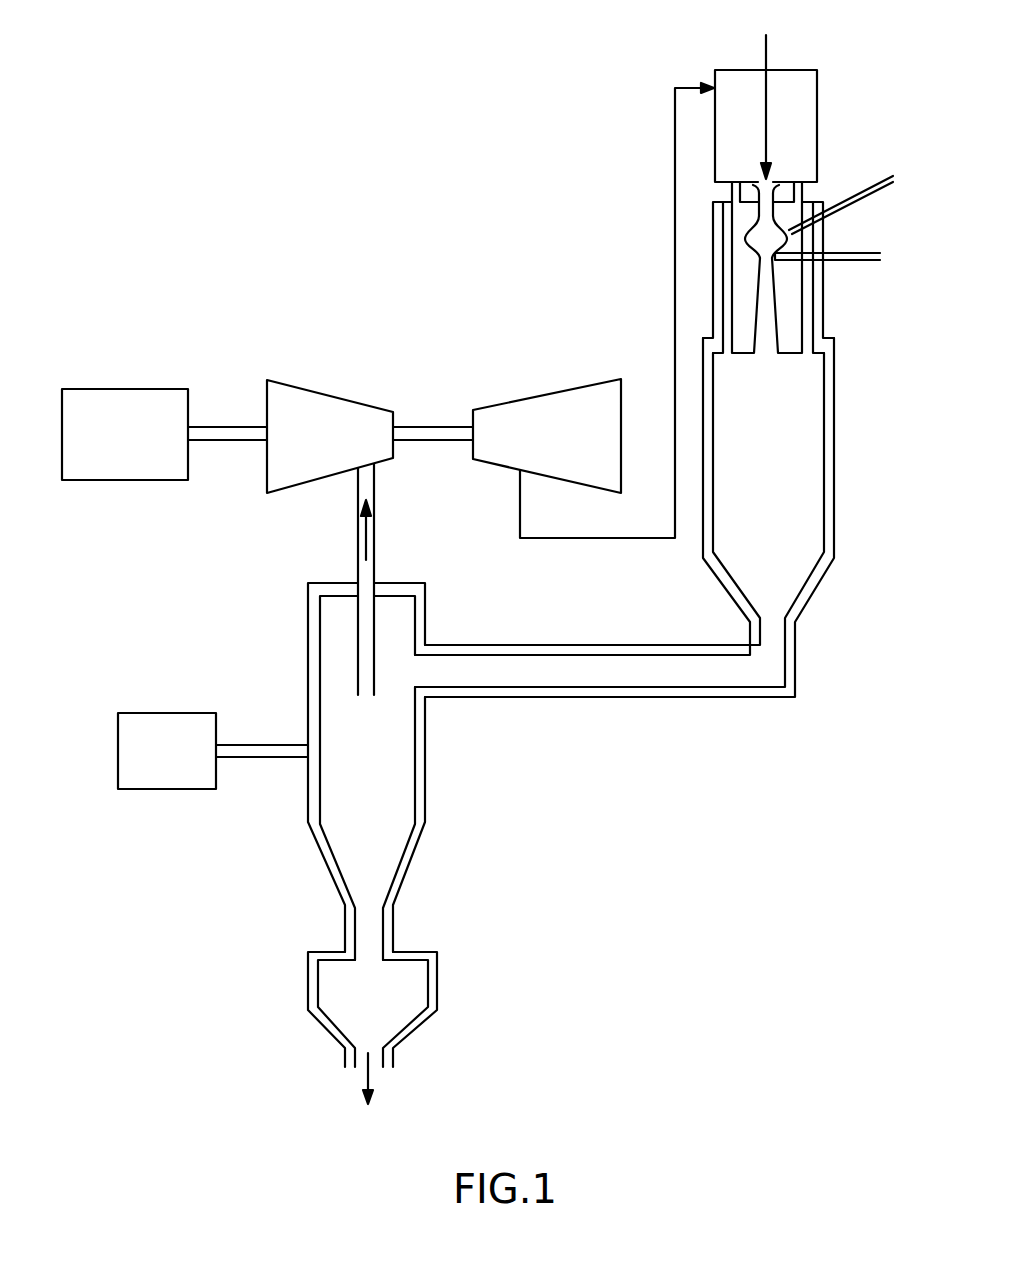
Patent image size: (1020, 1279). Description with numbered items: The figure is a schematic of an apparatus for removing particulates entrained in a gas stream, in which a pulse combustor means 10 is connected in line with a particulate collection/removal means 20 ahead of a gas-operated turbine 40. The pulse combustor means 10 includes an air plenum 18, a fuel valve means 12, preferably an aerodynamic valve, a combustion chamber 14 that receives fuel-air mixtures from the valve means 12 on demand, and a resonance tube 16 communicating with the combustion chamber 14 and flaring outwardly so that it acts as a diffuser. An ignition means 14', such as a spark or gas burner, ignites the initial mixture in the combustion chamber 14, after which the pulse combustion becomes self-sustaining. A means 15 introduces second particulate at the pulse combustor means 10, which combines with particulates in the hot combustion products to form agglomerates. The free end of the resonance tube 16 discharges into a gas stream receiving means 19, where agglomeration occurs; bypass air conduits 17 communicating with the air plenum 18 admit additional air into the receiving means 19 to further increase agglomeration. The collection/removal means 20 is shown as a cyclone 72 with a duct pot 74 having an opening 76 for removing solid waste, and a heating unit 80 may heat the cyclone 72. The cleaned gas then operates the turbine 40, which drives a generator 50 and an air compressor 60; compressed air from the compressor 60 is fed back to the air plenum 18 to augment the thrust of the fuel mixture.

The pulse combustor means 10 is at (870, 282).
The fuel valve means 12 is at (756, 194).
The combustion chamber 14 is at (707, 235).
The ignition means 14' is at (847, 178).
The means for introducing second particulate 15 is at (853, 252).
The resonance tube 16 is at (757, 307).
The bypass air conduits 17 is at (713, 347).
The air plenum 18 is at (715, 80).
The gas stream receiving means 19 is at (834, 483).
The particulate collection/removal means 20 is at (525, 858).
The gas-operated turbine 40 is at (337, 450).
The generator 50 is at (135, 450).
The air compressor 60 is at (573, 450).
The cyclone 72 is at (383, 788).
The duct pot 74 is at (384, 1008).
The opening 76 is at (378, 1066).
The heating unit 80 is at (185, 765).